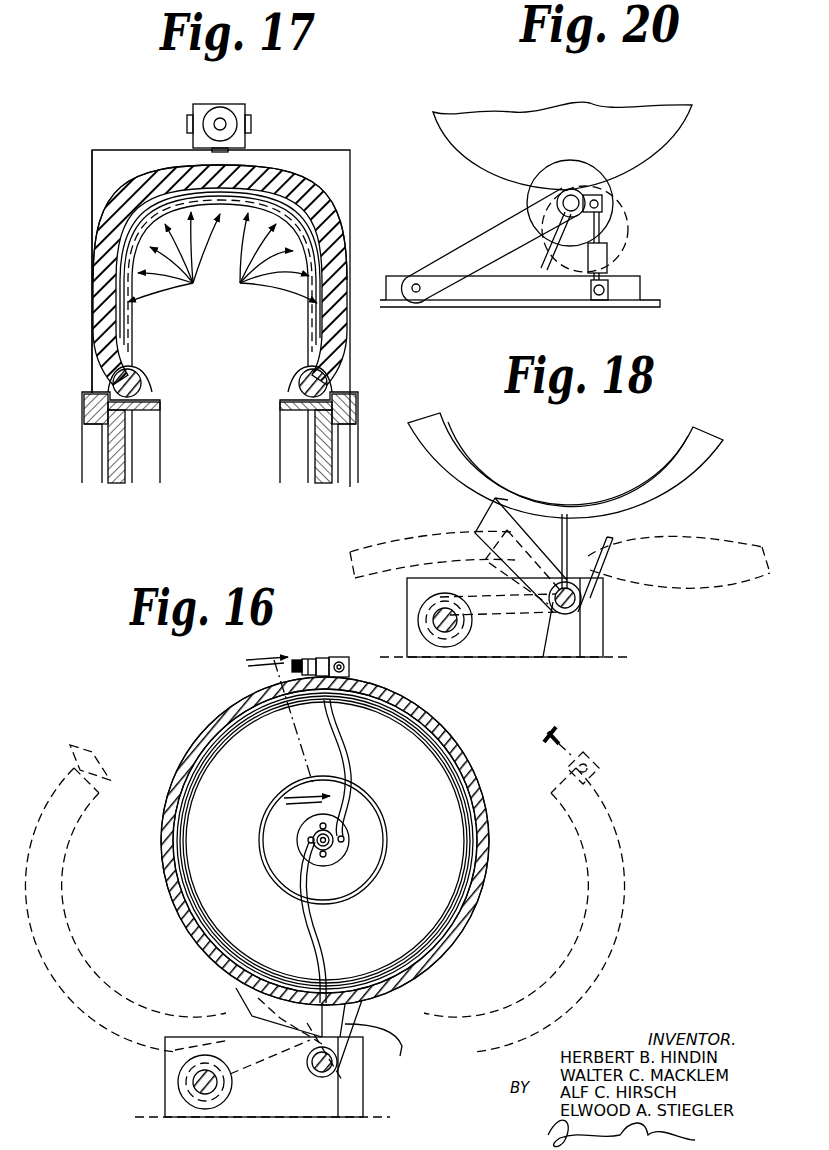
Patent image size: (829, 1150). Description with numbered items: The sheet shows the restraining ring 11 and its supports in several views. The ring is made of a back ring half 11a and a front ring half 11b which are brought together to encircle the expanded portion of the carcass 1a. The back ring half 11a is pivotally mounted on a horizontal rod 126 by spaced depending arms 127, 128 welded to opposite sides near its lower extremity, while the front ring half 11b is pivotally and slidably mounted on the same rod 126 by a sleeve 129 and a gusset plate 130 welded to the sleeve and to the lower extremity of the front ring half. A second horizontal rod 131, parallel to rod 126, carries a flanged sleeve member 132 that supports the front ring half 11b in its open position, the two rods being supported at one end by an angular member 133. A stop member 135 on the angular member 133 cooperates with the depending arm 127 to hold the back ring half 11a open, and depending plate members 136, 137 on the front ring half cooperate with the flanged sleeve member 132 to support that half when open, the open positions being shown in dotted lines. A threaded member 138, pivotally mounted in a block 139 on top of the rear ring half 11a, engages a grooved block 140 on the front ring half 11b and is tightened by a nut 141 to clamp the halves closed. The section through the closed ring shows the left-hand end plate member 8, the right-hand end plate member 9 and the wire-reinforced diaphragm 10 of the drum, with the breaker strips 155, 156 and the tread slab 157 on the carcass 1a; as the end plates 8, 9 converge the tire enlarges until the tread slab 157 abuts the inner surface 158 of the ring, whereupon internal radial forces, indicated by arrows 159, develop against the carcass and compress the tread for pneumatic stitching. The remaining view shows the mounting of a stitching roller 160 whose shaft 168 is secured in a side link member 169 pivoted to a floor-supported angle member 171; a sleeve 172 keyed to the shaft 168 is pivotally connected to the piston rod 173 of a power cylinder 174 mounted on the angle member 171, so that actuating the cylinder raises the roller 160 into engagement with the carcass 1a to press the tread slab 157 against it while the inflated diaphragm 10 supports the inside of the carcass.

In FIG. 17, the carcass 1a is at (341, 322).
In FIG. 20, the carcass 1a is at (628, 121).
In FIG. 17, the left-hand end plate member 8 is at (112, 452).
In FIG. 17, the right-hand end plate member 9 is at (320, 446).
In FIG. 17, the diaphragm 10 is at (120, 333).
In FIG. 17, the restraining ring 11 is at (372, 164).
In FIG. 18, the restraining ring 11 is at (578, 466).
In FIG. 16, the restraining ring 11 is at (452, 727).
In FIG. 18, the back ring half 11a is at (708, 452).
In FIG. 16, the back ring half 11a is at (466, 764).
In FIG. 17, the front ring half 11b is at (346, 186).
In FIG. 18, the front ring half 11b is at (420, 440).
In FIG. 16, the front ring half 11b is at (218, 721).
In FIG. 18, the horizontal rod 126 is at (558, 612).
In FIG. 16, the horizontal rod 126 is at (314, 1074).
In FIG. 16, the depending arm 127 is at (388, 1049).
In FIG. 18, the depending arm 128 is at (598, 572).
In FIG. 18, the sleeve 129 is at (548, 642).
In FIG. 18, the gusset plate 130 is at (568, 524).
In FIG. 18, the second horizontal rod 131 is at (432, 619).
In FIG. 16, the second horizontal rod 131 is at (194, 1078).
In FIG. 18, the flanged sleeve member 132 is at (442, 648).
In FIG. 16, the flanged sleeve member 132 is at (180, 1090).
In FIG. 18, the angular member 133 is at (568, 660).
In FIG. 16, the angular member 133 is at (286, 1116).
In FIG. 18, the stop member 135 is at (590, 636).
In FIG. 16, the stop member 135 is at (350, 1089).
In FIG. 16, the depending plate member 136 is at (240, 990).
In FIG. 18, the depending plate member 137 is at (476, 530).
In FIG. 17, the threaded member 138 is at (226, 120).
In FIG. 16, the threaded member 138 is at (297, 660).
In FIG. 16, the block 139 is at (350, 672).
In FIG. 17, the grooved block 140 is at (232, 104).
In FIG. 16, the grooved block 140 is at (80, 742).
In FIG. 17, the nut 141 is at (206, 118).
In FIG. 16, the nut 141 is at (311, 658).
In FIG. 17, the breaker strip 155 is at (128, 200).
In FIG. 17, the breaker strip 156 is at (126, 194).
In FIG. 17, the tread slab 157 is at (276, 180).
In FIG. 17, the inner surface 158 is at (322, 172).
In FIG. 17, the arrows 159 is at (222, 257).
In FIG. 20, the roller 160 is at (628, 193).
In FIG. 20, the shaft 168 is at (539, 244).
In FIG. 20, the side link member 169 is at (488, 240).
In FIG. 20, the angle member 171 is at (630, 292).
In FIG. 20, the sleeve 172 is at (558, 206).
In FIG. 20, the piston rod 173 is at (604, 233).
In FIG. 20, the power cylinder 174 is at (606, 262).